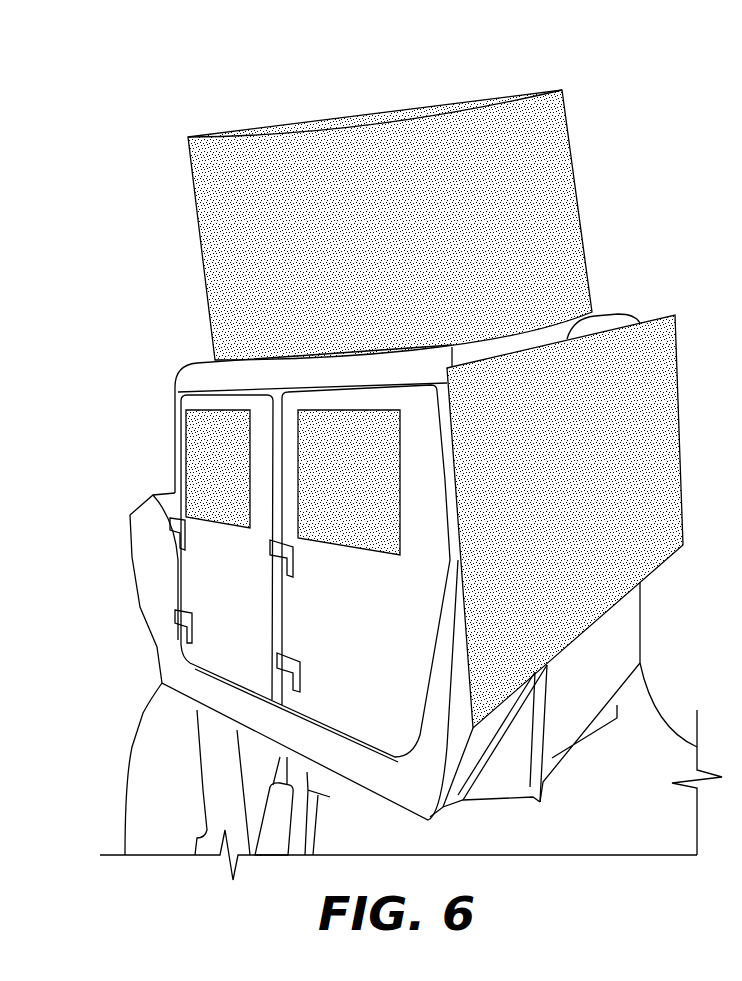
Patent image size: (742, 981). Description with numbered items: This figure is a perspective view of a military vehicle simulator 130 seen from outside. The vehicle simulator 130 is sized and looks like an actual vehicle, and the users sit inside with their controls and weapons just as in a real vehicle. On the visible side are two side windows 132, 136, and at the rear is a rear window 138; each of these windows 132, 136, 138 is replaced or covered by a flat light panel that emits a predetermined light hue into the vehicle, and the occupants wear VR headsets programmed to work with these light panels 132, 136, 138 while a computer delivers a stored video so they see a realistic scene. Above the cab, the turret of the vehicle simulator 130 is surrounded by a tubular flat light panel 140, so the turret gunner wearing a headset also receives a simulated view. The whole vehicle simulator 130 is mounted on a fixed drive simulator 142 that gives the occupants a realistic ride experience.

The military vehicle simulator 130 is at (212, 387).
The side window 132 is at (355, 523).
The side window 136 is at (210, 453).
The rear window 138 is at (567, 338).
The tubular flat light panel 140 is at (370, 125).
The fixed drive simulator 142 is at (272, 843).